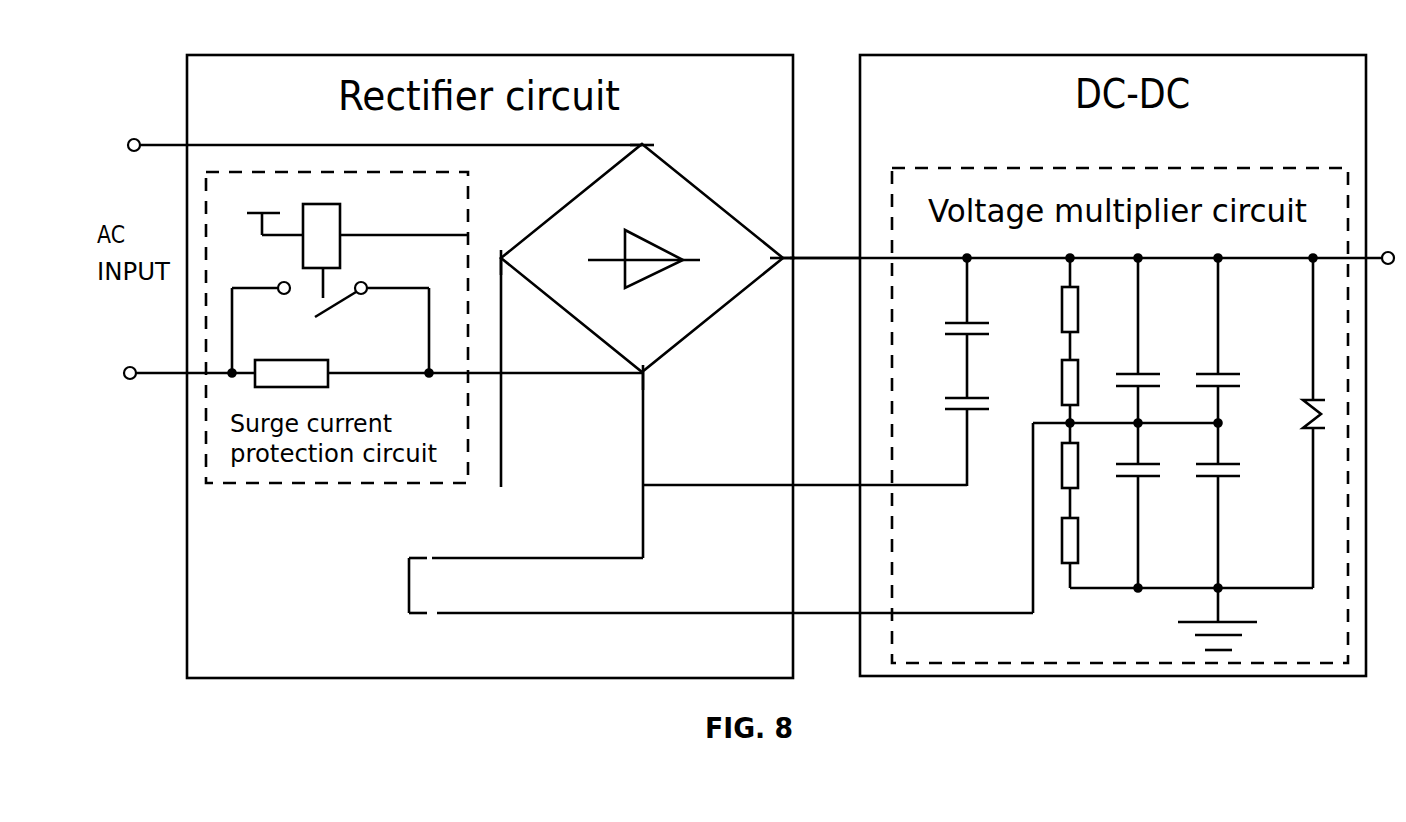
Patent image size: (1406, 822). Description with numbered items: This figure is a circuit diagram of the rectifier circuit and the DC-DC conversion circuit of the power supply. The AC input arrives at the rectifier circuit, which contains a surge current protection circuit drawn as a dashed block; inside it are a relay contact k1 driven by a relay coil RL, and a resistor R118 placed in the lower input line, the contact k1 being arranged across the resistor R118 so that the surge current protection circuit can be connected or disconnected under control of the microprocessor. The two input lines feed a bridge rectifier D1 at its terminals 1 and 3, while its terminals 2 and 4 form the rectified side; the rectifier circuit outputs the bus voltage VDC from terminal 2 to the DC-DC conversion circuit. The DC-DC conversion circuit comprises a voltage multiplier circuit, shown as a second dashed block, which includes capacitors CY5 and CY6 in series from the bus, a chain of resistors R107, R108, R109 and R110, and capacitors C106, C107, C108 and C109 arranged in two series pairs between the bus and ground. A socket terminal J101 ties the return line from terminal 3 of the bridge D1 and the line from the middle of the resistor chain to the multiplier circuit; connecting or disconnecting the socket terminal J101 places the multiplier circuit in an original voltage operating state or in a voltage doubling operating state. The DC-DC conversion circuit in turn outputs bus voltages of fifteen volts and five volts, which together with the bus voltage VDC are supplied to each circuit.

The relay switch contact k1 is at (331, 277).
The relay coil RL is at (385, 249).
The surge current limiting resistor R118 is at (327, 361).
The bridge rectifier D1 is at (642, 258).
The bridge rectifier terminal 1 is at (646, 126).
The bridge rectifier terminal 2 is at (782, 240).
The bridge rectifier terminal 3 is at (655, 385).
The bridge rectifier terminal 4 is at (490, 254).
The bus voltage VDC is at (825, 228).
The socket terminal J101 is at (694, 585).
The Y capacitor CY5 is at (947, 327).
The Y capacitor CY6 is at (946, 442).
The resistor R107 is at (1035, 308).
The resistor R108 is at (1035, 399).
The resistor R109 is at (1096, 477).
The resistor R110 is at (1096, 553).
The capacitor C106 is at (1160, 341).
The capacitor C107 is at (1160, 508).
The capacitor C108 is at (1241, 341).
The capacitor C109 is at (1241, 508).